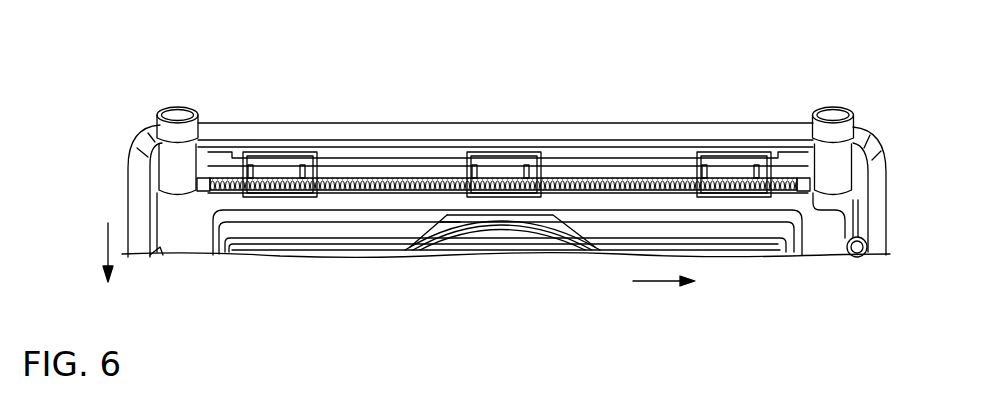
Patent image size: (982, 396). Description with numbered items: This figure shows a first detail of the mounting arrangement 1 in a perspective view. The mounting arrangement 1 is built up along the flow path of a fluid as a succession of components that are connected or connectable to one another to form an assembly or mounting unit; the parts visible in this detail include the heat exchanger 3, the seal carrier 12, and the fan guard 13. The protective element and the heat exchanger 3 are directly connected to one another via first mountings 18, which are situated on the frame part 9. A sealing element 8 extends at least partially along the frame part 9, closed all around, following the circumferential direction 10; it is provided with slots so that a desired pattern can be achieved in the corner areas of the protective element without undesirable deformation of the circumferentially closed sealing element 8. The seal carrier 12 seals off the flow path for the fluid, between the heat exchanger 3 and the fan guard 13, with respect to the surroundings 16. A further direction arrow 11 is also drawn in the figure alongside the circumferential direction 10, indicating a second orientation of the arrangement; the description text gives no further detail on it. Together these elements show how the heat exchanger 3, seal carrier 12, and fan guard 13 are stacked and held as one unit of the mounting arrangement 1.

The mounting arrangement 1 is at (738, 97).
The heat exchanger 3 is at (390, 183).
The sealing element 8 is at (629, 133).
The frame part 9 is at (420, 157).
The circumferential direction 10 is at (108, 250).
The second direction 11 is at (661, 281).
The seal carrier 12 is at (823, 217).
The fan guard 13 is at (723, 242).
The surroundings 16 is at (936, 146).
The first mountings 18 is at (713, 192).